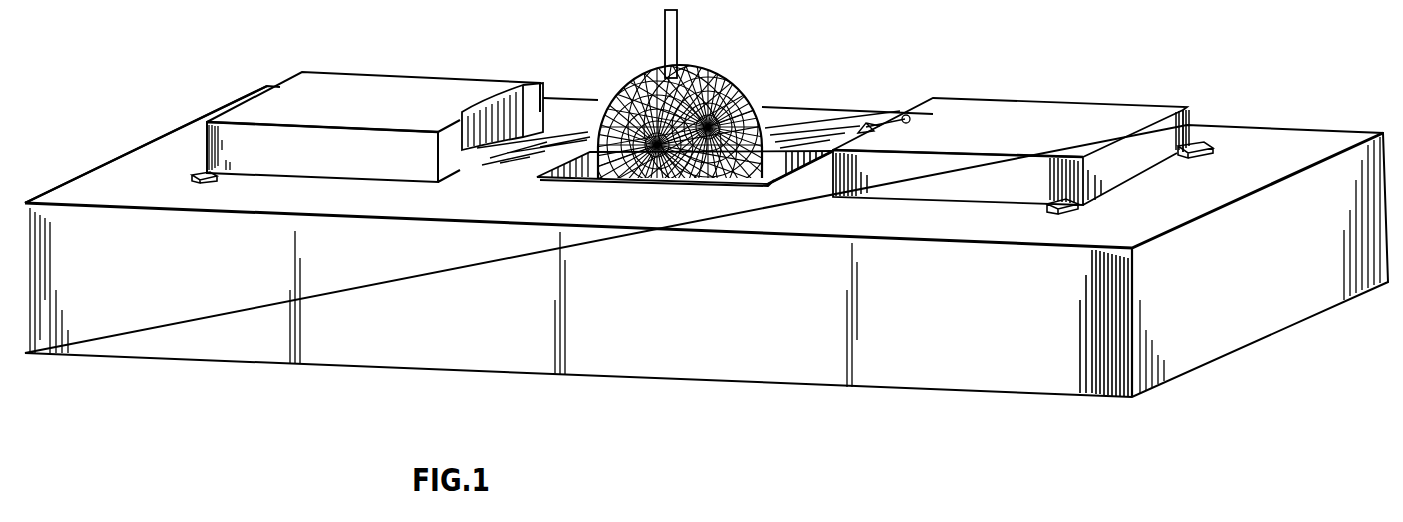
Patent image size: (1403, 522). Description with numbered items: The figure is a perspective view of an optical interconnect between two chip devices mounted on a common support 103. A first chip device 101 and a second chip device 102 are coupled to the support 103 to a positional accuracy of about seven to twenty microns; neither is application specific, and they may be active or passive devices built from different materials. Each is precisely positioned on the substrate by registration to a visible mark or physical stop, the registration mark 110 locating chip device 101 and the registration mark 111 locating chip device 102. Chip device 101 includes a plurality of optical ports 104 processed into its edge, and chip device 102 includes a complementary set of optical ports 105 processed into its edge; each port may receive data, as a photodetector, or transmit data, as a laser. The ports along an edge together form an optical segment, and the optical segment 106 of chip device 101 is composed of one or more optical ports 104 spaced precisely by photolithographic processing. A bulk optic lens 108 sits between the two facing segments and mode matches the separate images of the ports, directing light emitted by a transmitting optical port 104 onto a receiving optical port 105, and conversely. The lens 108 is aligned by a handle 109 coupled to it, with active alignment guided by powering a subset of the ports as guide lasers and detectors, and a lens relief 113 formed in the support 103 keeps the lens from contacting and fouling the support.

The chip device 101 is at (363, 165).
The chip device 102 is at (998, 192).
The support 103 is at (800, 385).
The optical ports 104 is at (457, 115).
The optical ports 105 is at (906, 115).
The optical segment 106 is at (483, 106).
The lens 108 is at (753, 107).
The handle 109 is at (678, 40).
The registration mark 110 is at (197, 178).
The registration mark 111 is at (1068, 209).
The lens relief 113 is at (795, 185).